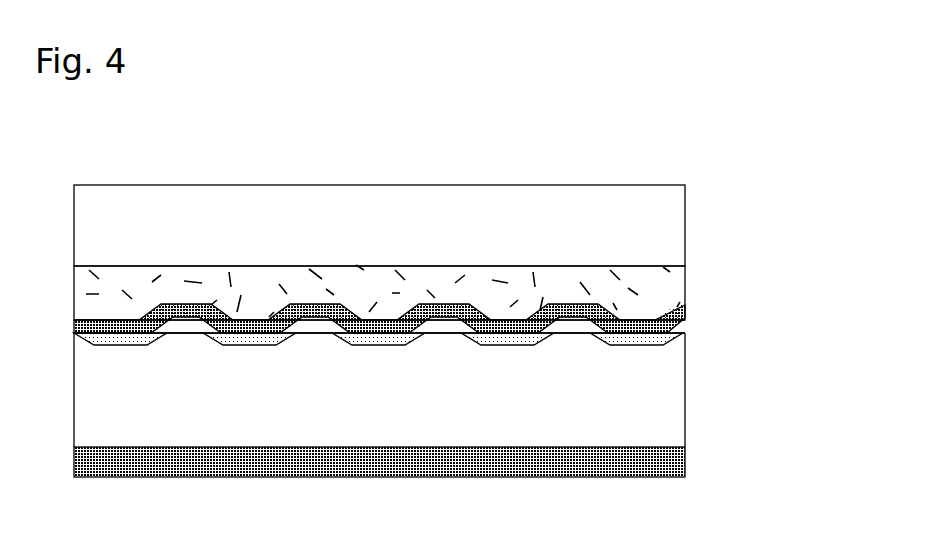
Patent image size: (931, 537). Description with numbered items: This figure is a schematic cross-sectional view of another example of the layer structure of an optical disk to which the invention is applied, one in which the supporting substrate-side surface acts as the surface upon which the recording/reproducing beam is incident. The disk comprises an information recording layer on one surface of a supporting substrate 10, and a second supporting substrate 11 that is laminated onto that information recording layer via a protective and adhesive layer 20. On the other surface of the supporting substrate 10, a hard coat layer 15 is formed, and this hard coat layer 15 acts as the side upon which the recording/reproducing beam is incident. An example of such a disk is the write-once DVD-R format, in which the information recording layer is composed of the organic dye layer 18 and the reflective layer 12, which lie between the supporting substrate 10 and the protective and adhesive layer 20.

The supporting substrate 10 is at (653, 407).
The second supporting substrate 11 is at (657, 210).
The reflective layer 12 is at (653, 317).
The hard coat layer 15 is at (685, 463).
The organic dye layer 18 is at (653, 348).
The protective and adhesive layer 20 is at (667, 280).